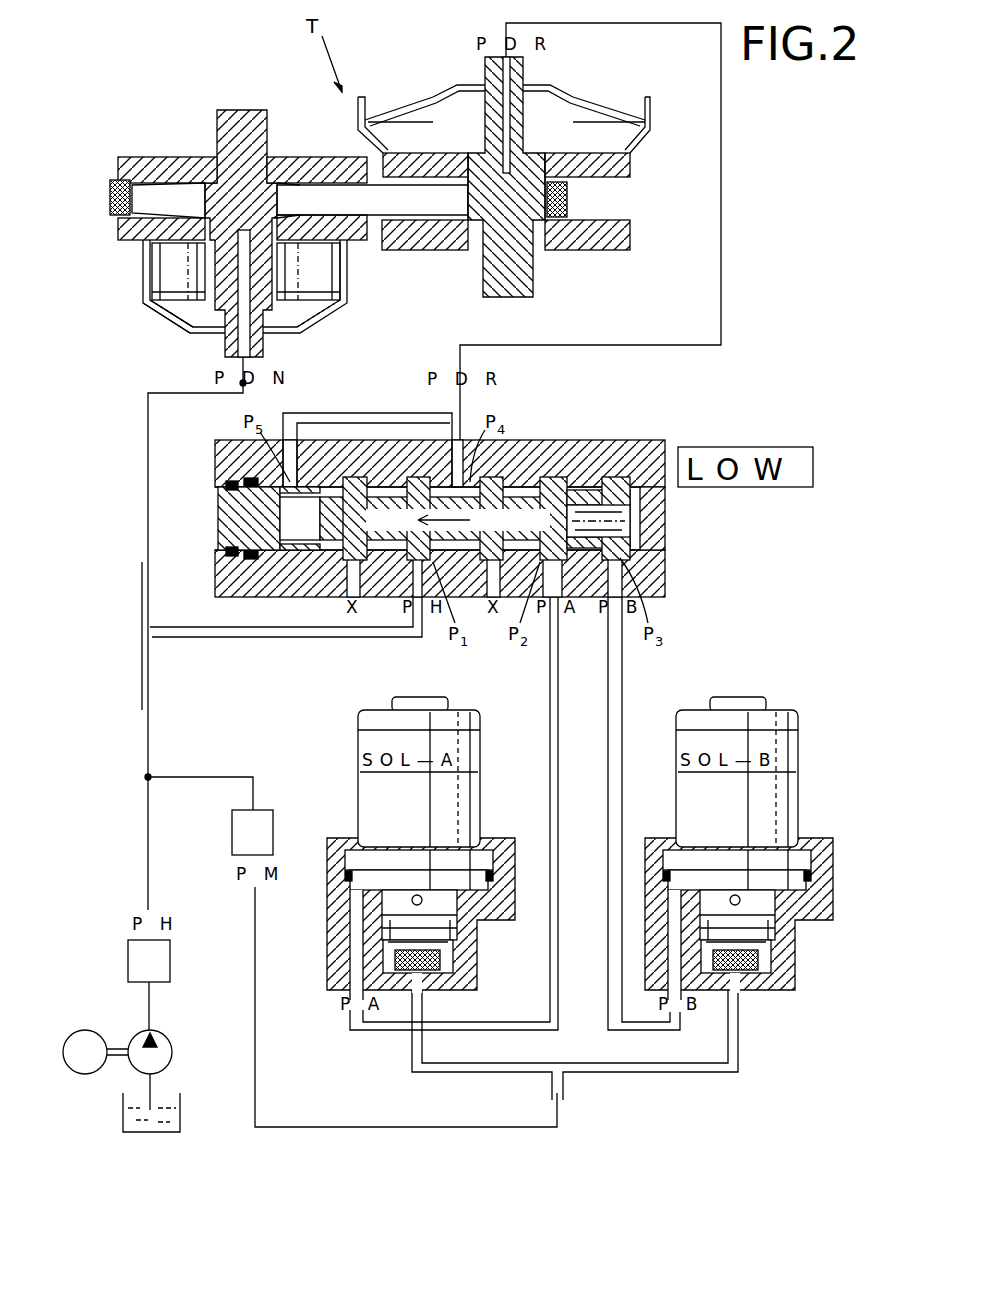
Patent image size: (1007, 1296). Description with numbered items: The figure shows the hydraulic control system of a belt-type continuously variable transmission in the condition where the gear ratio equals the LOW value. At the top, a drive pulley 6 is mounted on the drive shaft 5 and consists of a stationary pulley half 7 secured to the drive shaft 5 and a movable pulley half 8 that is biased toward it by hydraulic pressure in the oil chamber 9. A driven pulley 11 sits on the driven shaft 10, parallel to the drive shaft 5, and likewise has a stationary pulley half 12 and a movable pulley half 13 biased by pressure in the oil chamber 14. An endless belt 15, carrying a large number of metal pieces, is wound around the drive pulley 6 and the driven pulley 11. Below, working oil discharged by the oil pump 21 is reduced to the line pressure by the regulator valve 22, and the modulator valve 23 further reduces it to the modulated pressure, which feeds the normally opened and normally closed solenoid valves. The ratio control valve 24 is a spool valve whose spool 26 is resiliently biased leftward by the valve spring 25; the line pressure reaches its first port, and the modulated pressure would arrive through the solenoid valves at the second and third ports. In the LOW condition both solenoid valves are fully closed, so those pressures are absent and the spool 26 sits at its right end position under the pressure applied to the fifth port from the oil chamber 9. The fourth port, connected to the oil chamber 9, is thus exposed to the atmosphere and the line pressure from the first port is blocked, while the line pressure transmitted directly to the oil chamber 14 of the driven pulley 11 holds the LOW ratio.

The drive shaft 5 is at (482, 282).
The drive pulley 6 is at (633, 205).
The stationary pulley half 7 is at (602, 250).
The movable pulley half 8 is at (588, 172).
The oil chamber 9 is at (440, 115).
The driven shaft 10 is at (222, 128).
The driven pulley 11 is at (135, 250).
The stationary pulley half 12 is at (308, 157).
The movable pulley half 13 is at (345, 262).
The oil chamber 14 is at (148, 292).
The endless belt 15 is at (110, 198).
The oil pump 21 is at (172, 1052).
The regulator valve 22 is at (162, 977).
The modulator valve 23 is at (266, 848).
The ratio control valve 24 is at (596, 440).
The valve spring 25 is at (632, 530).
The spool 26 is at (392, 518).